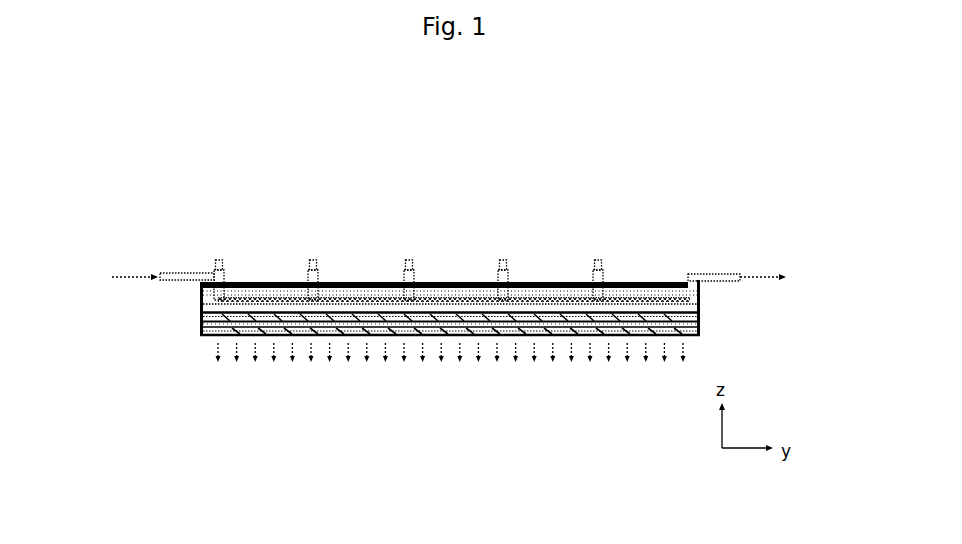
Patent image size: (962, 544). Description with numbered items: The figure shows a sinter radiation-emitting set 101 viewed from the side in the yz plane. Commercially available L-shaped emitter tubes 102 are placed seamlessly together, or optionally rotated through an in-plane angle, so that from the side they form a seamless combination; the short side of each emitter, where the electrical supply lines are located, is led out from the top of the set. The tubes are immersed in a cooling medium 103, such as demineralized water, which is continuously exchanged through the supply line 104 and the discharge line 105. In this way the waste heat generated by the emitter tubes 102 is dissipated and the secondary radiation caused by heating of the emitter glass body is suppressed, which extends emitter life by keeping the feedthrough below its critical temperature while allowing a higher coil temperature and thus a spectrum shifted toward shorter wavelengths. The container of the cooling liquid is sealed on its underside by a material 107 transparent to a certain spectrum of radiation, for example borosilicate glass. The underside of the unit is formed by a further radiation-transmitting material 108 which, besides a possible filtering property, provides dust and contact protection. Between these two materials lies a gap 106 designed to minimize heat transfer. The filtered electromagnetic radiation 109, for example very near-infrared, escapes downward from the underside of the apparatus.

The sinter radiation-emitting set 101 is at (452, 281).
The emitter tube 102 is at (503, 260).
The cooling medium 103 is at (378, 281).
The supply line 104 is at (182, 274).
The discharge line 105 is at (717, 274).
The gap 106 is at (200, 326).
The transparent material 107 is at (700, 317).
The radiation-transmitting material 108 is at (700, 332).
The electromagnetic radiation 109 is at (242, 380).